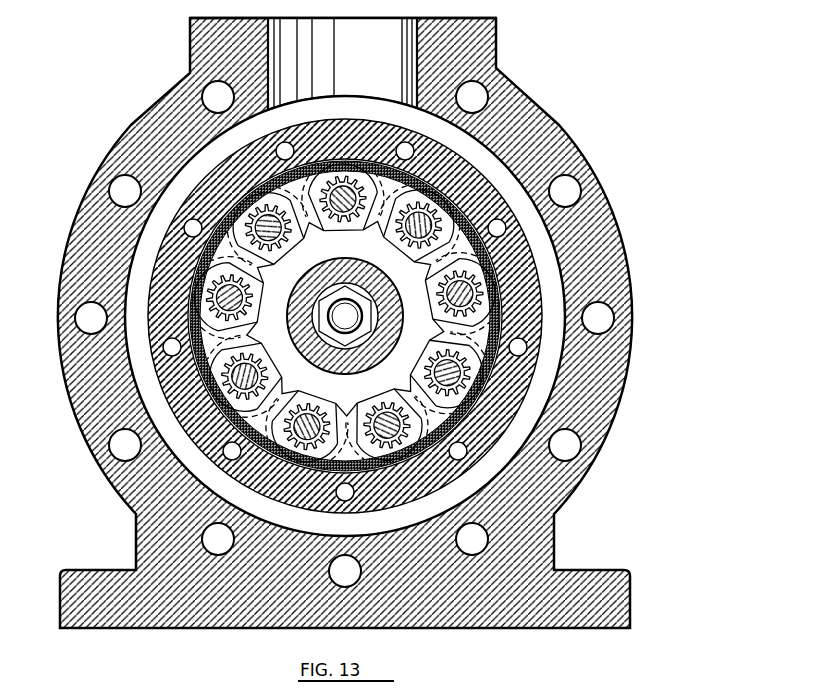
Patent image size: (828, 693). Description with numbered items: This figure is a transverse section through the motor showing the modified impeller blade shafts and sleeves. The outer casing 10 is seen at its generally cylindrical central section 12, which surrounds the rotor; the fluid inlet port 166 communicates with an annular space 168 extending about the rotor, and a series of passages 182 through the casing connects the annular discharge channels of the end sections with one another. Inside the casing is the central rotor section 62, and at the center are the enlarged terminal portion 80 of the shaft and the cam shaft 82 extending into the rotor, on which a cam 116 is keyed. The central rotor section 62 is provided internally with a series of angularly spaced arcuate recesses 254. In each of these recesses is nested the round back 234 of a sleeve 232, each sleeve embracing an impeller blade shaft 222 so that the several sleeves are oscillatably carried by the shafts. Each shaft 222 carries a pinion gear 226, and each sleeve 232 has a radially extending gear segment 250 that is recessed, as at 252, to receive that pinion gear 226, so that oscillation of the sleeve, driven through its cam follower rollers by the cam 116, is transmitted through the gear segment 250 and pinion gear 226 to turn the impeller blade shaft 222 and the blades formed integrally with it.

The casing 10 is at (347, 323).
The central section 12 is at (57, 356).
The central rotor section 62 is at (205, 173).
The enlarged terminal portion of the shaft 80 is at (316, 278).
The cam shaft 82 is at (328, 303).
The cam 116 is at (349, 213).
The inlet port 166 is at (384, 48).
The annular space 168 is at (130, 268).
The passages 182 is at (105, 441).
The impeller blade shaft 222 is at (466, 294).
The pinion gear 226 is at (433, 212).
The sleeve 232 is at (668, 309).
The round outer surface of the sleeve 234 is at (527, 223).
The gear segment 250 is at (488, 320).
The recess 252 is at (474, 306).
The arcuate recesses 254 is at (240, 207).